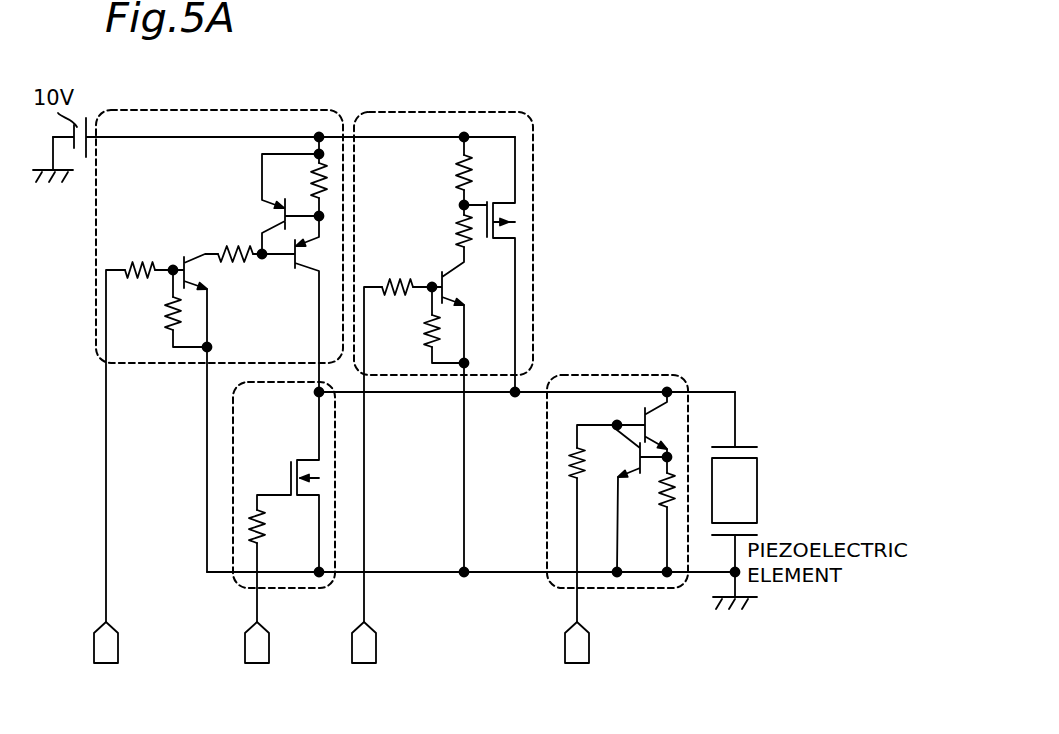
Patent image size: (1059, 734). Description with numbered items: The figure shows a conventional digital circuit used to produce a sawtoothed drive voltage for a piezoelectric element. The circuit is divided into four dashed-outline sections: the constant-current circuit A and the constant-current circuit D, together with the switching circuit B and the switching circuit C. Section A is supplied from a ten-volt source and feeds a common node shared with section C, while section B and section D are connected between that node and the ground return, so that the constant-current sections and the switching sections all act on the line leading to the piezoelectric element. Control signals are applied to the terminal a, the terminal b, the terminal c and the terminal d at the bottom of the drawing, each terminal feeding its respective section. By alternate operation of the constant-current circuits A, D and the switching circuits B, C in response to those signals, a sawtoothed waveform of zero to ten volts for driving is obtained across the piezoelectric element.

The constant-current circuit A is at (207, 110).
The switching circuit B is at (240, 588).
The switching circuit C is at (415, 112).
The constant-current circuit D is at (587, 375).
The terminal a is at (106, 658).
The terminal b is at (257, 658).
The terminal c is at (364, 658).
The terminal d is at (577, 658).